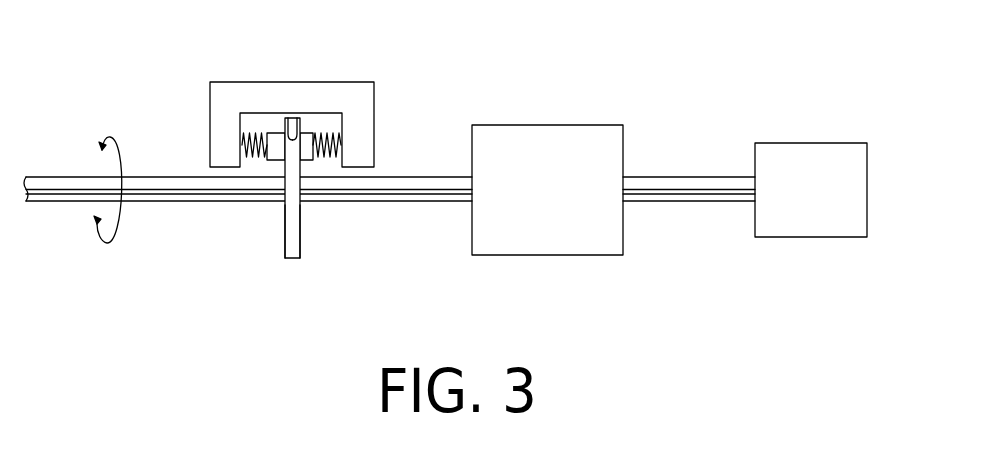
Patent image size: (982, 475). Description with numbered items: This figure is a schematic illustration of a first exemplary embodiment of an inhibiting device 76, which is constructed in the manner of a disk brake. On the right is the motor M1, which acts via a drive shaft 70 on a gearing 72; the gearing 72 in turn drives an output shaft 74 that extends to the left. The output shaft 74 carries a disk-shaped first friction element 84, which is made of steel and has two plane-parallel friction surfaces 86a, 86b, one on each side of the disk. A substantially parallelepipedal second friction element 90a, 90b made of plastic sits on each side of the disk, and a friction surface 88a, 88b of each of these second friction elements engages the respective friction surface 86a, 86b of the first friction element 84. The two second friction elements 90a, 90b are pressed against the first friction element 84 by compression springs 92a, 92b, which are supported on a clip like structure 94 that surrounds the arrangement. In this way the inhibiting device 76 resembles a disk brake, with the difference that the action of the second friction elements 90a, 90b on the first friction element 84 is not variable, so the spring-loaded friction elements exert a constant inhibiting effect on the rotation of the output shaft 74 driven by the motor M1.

The inhibiting device 76 is at (262, 161).
The clip like structure 94 is at (374, 99).
The compression spring 92a is at (247, 135).
The compression spring 92b is at (333, 133).
The second friction element 90a is at (258, 160).
The second friction element 90b is at (313, 160).
The friction surface 88a is at (288, 120).
The friction surface 88b is at (297, 122).
The first friction element 84 is at (288, 208).
The friction surface 86a is at (285, 233).
The friction surface 86b is at (300, 228).
The output shaft 74 is at (445, 202).
The gearing 72 is at (595, 247).
The drive shaft 70 is at (688, 201).
The motor M1 is at (778, 226).